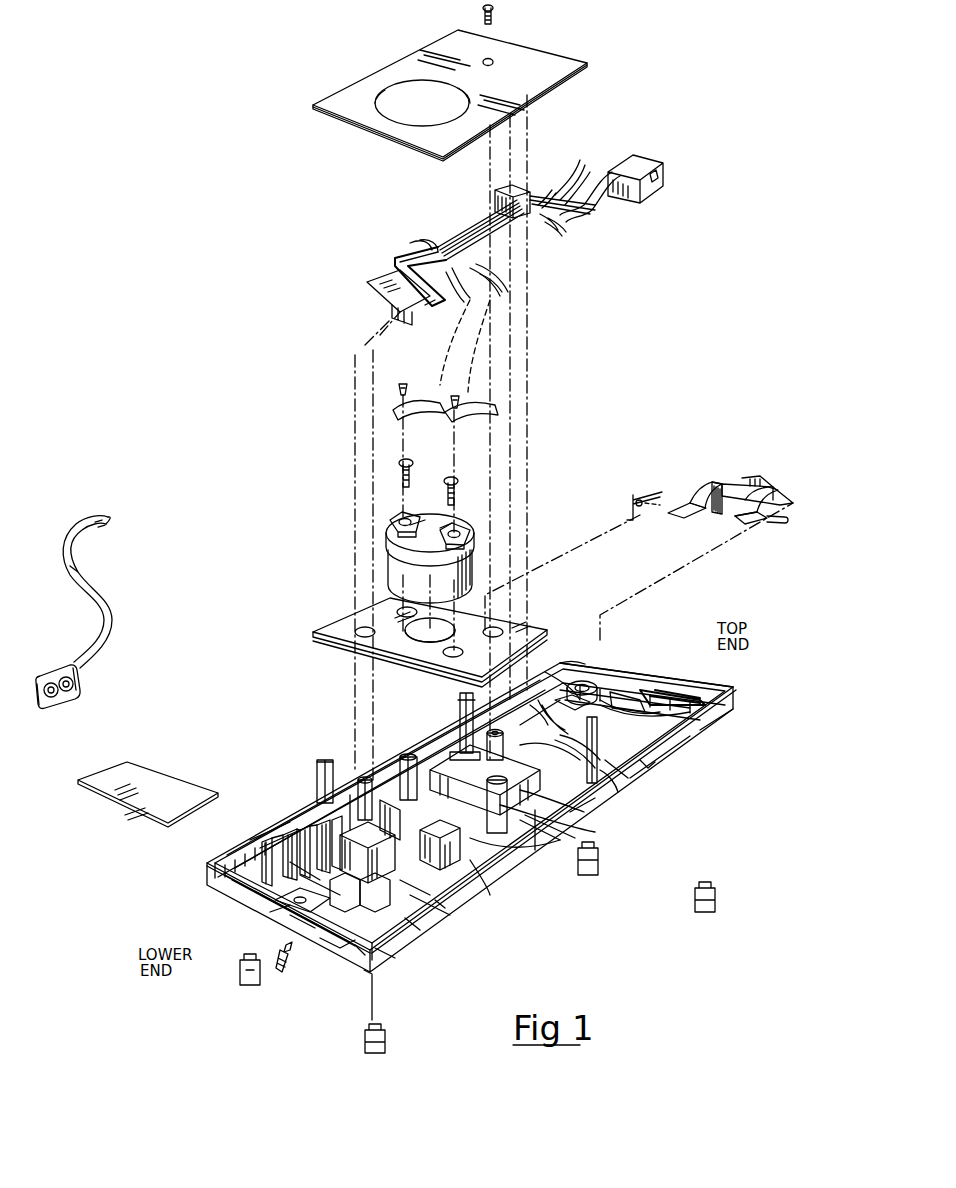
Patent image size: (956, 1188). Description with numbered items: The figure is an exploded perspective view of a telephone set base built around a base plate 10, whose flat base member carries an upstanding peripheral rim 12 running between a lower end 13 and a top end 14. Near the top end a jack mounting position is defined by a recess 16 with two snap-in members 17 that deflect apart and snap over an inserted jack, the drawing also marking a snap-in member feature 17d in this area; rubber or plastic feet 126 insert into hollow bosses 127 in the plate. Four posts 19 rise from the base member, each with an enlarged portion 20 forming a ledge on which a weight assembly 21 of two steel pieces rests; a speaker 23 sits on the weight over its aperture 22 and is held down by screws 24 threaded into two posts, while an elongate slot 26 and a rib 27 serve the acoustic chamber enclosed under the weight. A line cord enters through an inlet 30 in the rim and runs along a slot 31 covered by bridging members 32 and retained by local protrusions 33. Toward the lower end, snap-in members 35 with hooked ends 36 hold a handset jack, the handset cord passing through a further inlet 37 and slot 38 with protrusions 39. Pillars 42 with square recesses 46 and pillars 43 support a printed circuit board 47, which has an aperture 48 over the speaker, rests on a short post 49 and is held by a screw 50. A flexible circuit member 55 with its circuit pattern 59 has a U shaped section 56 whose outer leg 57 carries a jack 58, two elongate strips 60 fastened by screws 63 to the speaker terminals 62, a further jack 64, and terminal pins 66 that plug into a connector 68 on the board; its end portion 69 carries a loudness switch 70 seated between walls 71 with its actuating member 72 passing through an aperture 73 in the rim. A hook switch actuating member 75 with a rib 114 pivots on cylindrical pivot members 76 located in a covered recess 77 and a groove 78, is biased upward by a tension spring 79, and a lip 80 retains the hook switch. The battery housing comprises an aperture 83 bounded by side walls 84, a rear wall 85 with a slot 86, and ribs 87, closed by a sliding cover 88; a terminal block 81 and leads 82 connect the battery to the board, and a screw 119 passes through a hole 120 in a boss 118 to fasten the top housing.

The base plate 10 is at (408, 935).
The peripheral rim 12 is at (668, 685).
The lower end 13 is at (300, 920).
The top end 14 is at (704, 684).
The recess 16 is at (582, 818).
The snap-in members 17 is at (595, 832).
The wire 17d is at (584, 812).
The posts 19 is at (392, 778).
The enlarged portion of post 20 is at (388, 812).
The weight assembly 21 is at (437, 610).
The aperture 22 is at (443, 622).
The speaker 23 is at (462, 535).
The screws 24 is at (408, 462).
The elongate slot 26 is at (490, 895).
The rib 27 is at (350, 795).
The inlet 30 is at (625, 680).
The slot 31 is at (560, 660).
The bridging members 32 is at (572, 695).
The local protrusions 33 is at (612, 692).
The snap-in members 35 is at (420, 930).
The hooked ends 36 is at (445, 908).
The further inlet 37 is at (335, 950).
The slot 38 is at (358, 960).
The local protrusions 39 is at (390, 960).
The pillars 42 is at (318, 775).
The pillars 43 is at (460, 702).
The square recesses 46 is at (330, 760).
The printed circuit board 47 is at (340, 108).
The aperture 48 is at (392, 118).
The short post 49 is at (538, 700).
The screw 50 is at (492, 14).
The flexible circuit member 55 is at (475, 228).
The U shaped section 56 is at (437, 306).
The outer leg 57 is at (382, 288).
The jack 58 is at (392, 311).
The circuit pattern 59 is at (545, 200).
The elongate strips 60 is at (495, 278).
The terminals 62 is at (402, 520).
The screws 63 is at (403, 386).
The further jack 64 is at (505, 192).
The terminal pins 66 is at (572, 172).
The connector 68 is at (584, 80).
The end portion 69 is at (636, 150).
The switch 70 is at (662, 169).
The walls 71 is at (690, 740).
The switch actuating member 72 is at (655, 183).
The aperture 73 is at (650, 762).
The hook switch actuating member 75 is at (724, 484).
The pivot members 76 is at (682, 508).
The covered recess 77 is at (628, 782).
The groove 78 is at (618, 792).
The tension spring 79 is at (632, 498).
The lip 80 is at (700, 724).
The terminal block 81 is at (50, 676).
The leads 82 is at (76, 560).
The aperture 83 is at (367, 852).
The side walls 84 is at (345, 892).
The rear wall 85 is at (375, 892).
The slot 86 is at (368, 972).
The ribs 87 is at (330, 818).
The sliding cover 88 is at (186, 790).
The rib 114 is at (745, 478).
The boss 118 is at (280, 915).
The screw 119 is at (284, 960).
The hole 120 is at (265, 905).
The feet 126 is at (246, 978).
The hollow bosses 127 is at (598, 680).